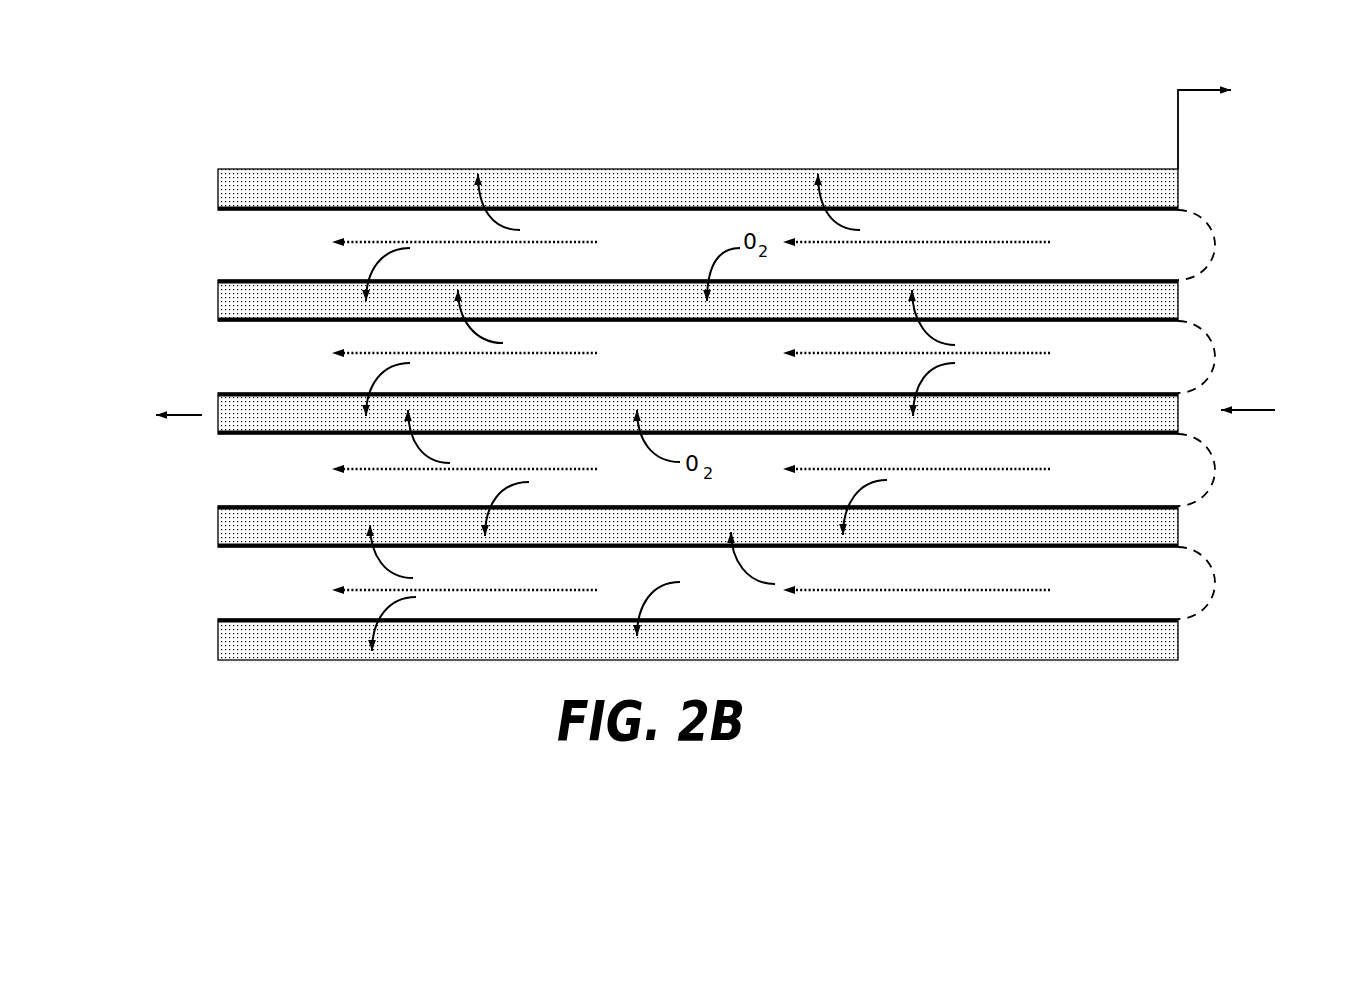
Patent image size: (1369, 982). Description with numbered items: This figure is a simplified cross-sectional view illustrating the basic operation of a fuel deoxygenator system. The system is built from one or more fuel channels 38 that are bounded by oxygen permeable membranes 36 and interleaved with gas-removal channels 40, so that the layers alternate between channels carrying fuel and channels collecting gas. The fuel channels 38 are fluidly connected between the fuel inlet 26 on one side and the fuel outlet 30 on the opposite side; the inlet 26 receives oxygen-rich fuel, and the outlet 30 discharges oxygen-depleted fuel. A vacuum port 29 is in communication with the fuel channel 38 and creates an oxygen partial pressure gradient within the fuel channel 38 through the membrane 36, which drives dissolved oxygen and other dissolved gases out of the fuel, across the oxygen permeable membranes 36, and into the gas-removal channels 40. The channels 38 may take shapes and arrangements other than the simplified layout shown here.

The fuel inlet 26 is at (1313, 422).
The vacuum port 29 is at (1298, 128).
The fuel outlet 30 is at (133, 428).
The oxygen permeable membrane 36 is at (288, 321).
The fuel channel 38 is at (1140, 256).
The gas-removal channel 40 is at (995, 200).